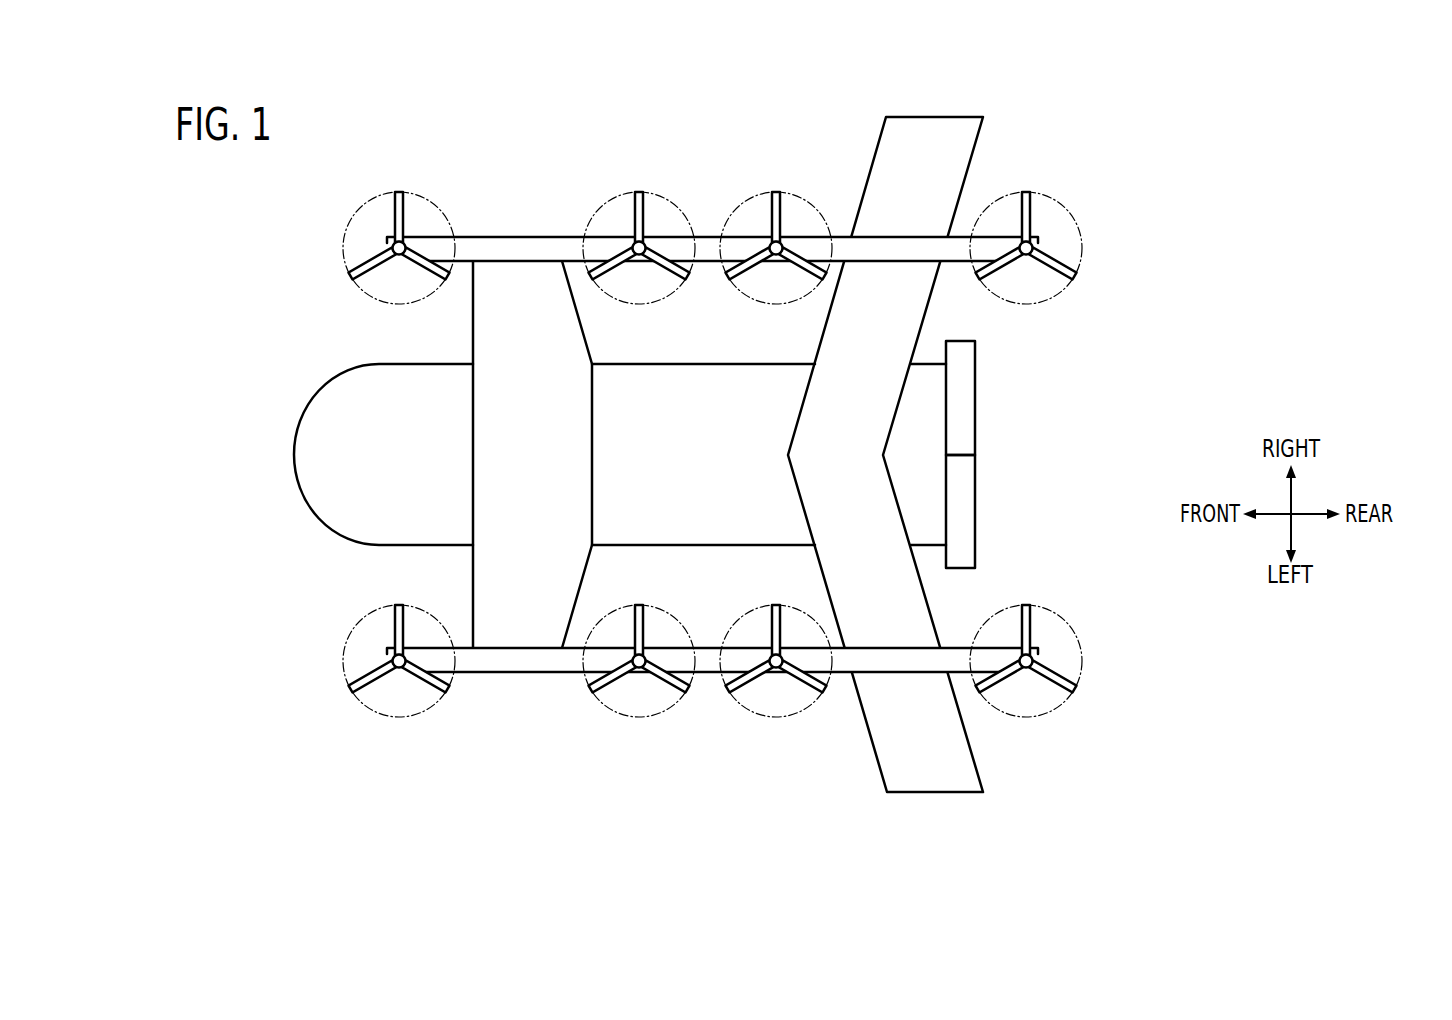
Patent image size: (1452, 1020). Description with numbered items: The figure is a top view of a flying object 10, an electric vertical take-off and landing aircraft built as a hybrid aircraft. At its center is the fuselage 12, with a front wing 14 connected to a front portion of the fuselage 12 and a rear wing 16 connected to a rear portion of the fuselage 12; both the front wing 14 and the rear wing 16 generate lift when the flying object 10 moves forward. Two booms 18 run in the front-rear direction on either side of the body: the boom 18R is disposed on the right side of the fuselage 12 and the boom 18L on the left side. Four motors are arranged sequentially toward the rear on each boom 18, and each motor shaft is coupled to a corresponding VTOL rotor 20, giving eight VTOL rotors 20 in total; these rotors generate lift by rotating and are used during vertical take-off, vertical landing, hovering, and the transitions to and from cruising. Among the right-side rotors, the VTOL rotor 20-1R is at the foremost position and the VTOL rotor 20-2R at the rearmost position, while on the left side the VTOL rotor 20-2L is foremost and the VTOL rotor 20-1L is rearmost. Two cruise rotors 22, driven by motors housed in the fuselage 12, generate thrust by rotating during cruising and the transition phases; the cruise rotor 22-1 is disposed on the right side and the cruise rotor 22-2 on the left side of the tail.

The flying object 10 is at (217, 211).
The fuselage 12 is at (296, 425).
The front wing 14 is at (507, 282).
The rear wing 16 is at (926, 117).
The boom 18 is at (712, 455).
The boom 18R is at (885, 235).
The boom 18L is at (885, 673).
The VTOL rotor 20 is at (779, 455).
The VTOL rotor 20-1R is at (395, 192).
The VTOL rotor 20-2R is at (1032, 205).
The VTOL rotor 20-1L is at (1073, 687).
The VTOL rotor 20-2L is at (427, 684).
The cruise rotor 22 is at (1014, 454).
The cruise rotor 22-1 is at (976, 401).
The cruise rotor 22-2 is at (976, 507).